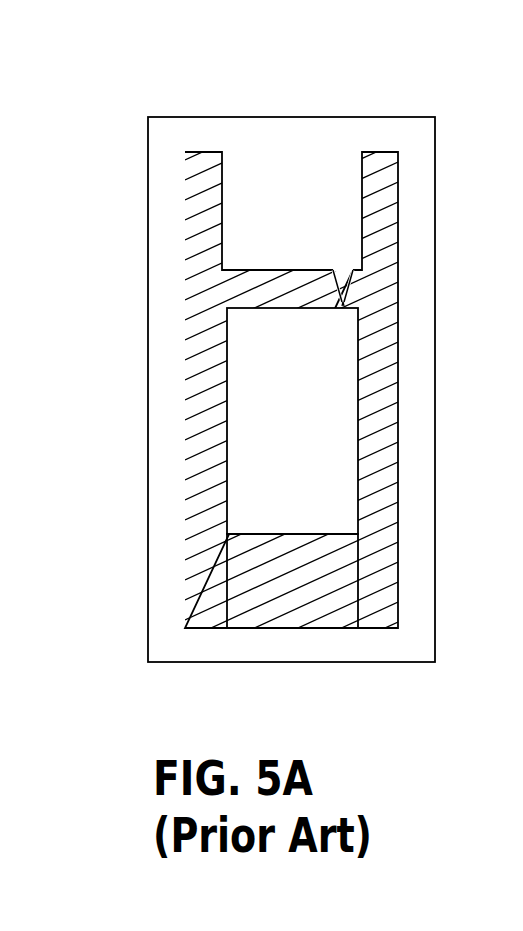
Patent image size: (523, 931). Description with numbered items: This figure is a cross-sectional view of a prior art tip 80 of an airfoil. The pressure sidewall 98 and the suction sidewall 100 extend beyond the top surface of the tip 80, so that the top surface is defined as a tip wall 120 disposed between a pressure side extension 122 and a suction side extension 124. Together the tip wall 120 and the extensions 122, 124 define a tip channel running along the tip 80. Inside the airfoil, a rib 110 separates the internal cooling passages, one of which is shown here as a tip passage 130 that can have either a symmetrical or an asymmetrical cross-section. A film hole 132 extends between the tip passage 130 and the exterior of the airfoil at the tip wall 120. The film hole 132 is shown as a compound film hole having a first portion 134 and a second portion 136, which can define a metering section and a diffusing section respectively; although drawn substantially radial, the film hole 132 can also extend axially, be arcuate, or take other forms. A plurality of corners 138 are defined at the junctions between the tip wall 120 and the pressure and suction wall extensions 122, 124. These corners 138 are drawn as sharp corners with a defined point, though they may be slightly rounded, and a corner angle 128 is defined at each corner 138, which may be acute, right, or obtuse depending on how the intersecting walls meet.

The tip 80 is at (331, 153).
The pressure sidewall 98 is at (398, 386).
The suction sidewall 100 is at (185, 457).
The rib 110 is at (266, 588).
The tip wall 120 is at (312, 270).
The pressure side extension 122 is at (380, 152).
The suction side extension 124 is at (212, 152).
The corner angle 128 is at (280, 268).
The tip passage 130 is at (267, 486).
The film hole 132 is at (342, 307).
The first portion 134 is at (347, 305).
The second portion 136 is at (348, 300).
The corner 138 is at (235, 258).